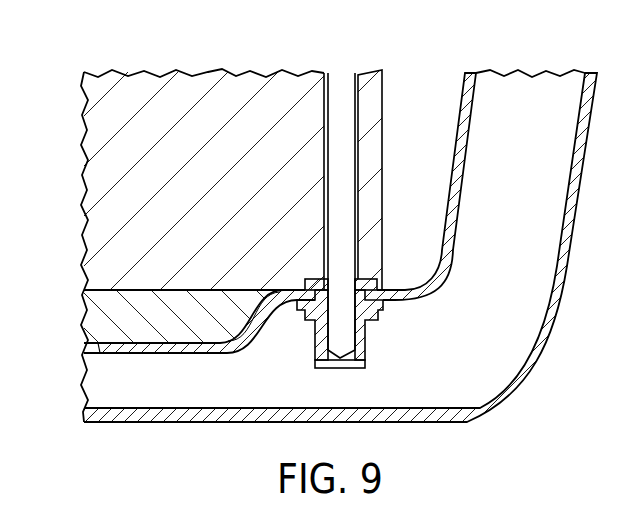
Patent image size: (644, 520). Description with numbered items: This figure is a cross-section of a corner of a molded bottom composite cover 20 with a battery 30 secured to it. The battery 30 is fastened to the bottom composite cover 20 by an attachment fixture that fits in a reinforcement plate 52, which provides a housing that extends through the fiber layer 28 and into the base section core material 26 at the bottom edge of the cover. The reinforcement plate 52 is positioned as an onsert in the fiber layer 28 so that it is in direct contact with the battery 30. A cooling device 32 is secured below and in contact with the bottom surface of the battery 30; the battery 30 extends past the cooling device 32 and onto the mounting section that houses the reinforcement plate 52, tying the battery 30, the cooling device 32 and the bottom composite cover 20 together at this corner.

The bottom composite cover 20 is at (518, 397).
The base section core material 26 is at (528, 82).
The fiber layer 28 is at (459, 108).
The battery 30 is at (235, 80).
The cooling device 32 is at (88, 317).
The reinforcement plate 52 is at (356, 345).